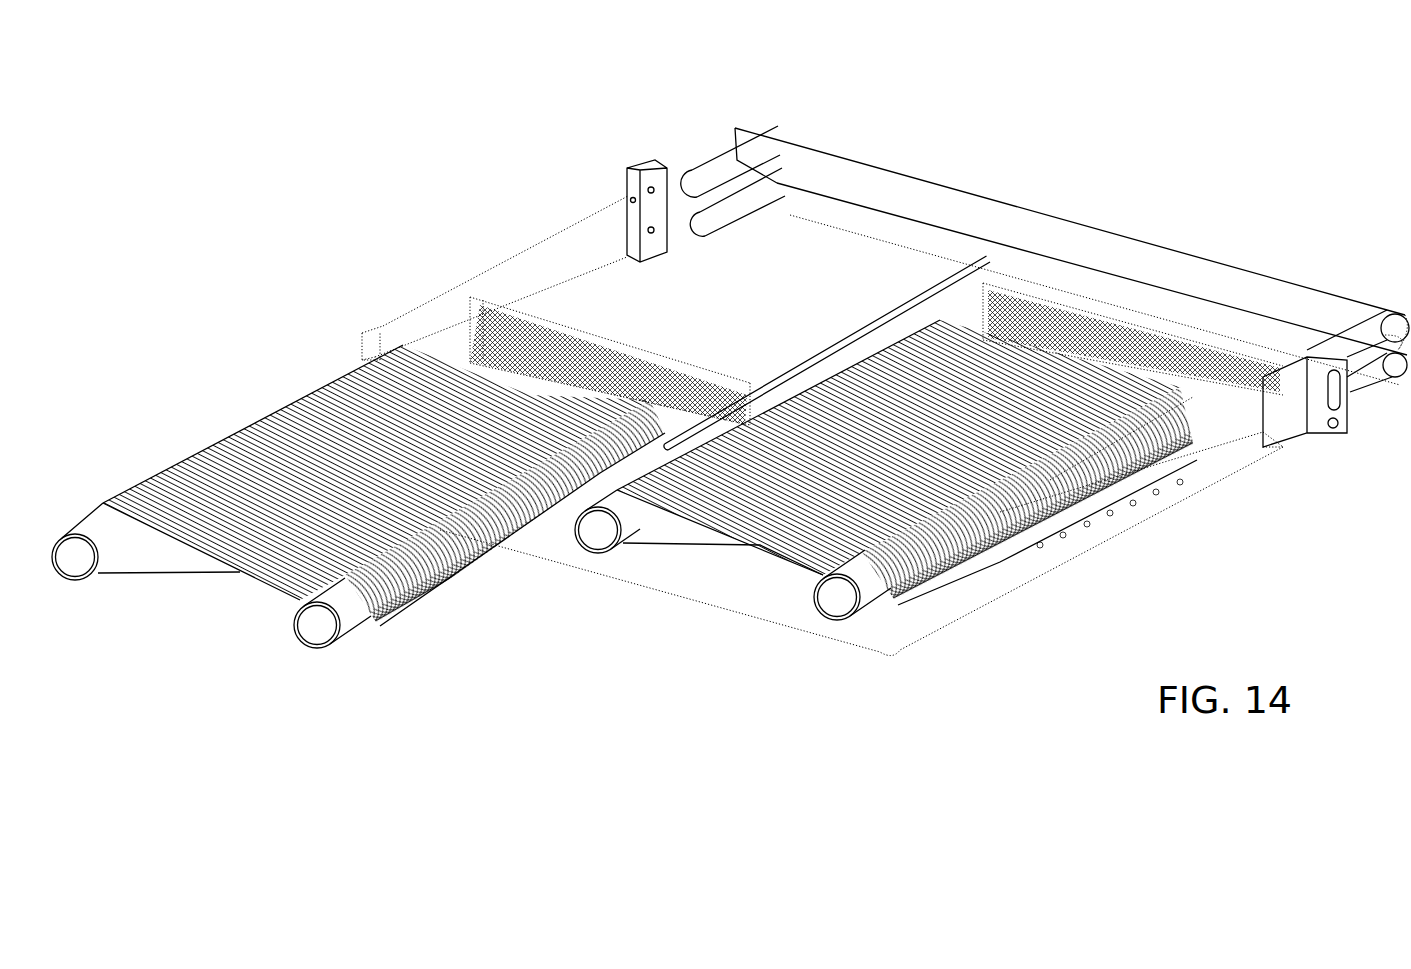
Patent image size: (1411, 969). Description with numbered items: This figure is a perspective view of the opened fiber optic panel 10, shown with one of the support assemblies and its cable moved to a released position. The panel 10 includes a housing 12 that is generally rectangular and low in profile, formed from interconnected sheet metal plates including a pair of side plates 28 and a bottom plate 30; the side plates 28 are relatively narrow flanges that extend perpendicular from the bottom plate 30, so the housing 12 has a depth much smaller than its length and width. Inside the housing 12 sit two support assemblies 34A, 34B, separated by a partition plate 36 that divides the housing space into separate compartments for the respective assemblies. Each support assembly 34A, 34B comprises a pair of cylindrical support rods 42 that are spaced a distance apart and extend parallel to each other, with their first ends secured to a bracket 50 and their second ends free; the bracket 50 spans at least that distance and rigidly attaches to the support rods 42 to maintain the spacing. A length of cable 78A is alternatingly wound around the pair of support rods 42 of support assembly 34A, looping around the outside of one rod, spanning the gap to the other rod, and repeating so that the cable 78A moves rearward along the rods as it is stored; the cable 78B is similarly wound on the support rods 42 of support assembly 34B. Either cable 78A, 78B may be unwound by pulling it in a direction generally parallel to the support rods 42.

The fiber optic panel 10 is at (877, 150).
The housing 12 is at (1147, 492).
The side plates 28 is at (589, 233).
The bottom plate 30 is at (647, 573).
The support assembly 34A is at (839, 500).
The support assembly 34B is at (363, 558).
The partition plate 36 is at (852, 350).
The support rods 42 is at (313, 630).
The bracket 50 is at (605, 335).
The cable 78A is at (925, 550).
The cable 78B is at (393, 612).